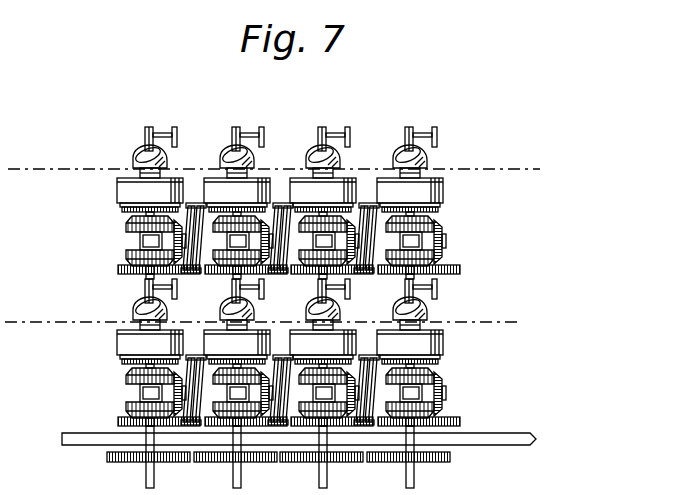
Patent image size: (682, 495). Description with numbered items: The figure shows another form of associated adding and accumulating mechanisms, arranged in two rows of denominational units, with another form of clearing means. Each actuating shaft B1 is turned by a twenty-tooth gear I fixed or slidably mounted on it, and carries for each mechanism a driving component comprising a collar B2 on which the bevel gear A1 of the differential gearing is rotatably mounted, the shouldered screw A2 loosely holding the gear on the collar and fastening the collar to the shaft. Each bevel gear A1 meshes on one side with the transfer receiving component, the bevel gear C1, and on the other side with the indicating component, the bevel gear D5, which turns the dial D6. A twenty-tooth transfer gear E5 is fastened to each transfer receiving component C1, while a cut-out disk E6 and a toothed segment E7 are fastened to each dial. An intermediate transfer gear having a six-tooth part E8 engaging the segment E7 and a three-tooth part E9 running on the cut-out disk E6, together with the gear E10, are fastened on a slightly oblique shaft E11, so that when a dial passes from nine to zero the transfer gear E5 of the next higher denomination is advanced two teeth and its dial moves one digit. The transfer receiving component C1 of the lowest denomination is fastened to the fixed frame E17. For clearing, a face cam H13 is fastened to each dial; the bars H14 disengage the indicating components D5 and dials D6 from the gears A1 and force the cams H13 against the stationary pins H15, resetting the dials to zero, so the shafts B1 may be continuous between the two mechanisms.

The bar H14 is at (40, 168).
The stationary pin H15 is at (170, 128).
The face cam H13 is at (138, 156).
The dial D6 is at (118, 190).
The cut-out disk E6 is at (120, 205).
The toothed segment E7 is at (123, 207).
The indicating component D5 is at (133, 222).
The collar B2 is at (142, 240).
The transfer receiving component C1 is at (130, 255).
The shouldered screw A2 is at (270, 242).
The bevel gear A1 is at (186, 238).
The transfer gear E5 is at (120, 270).
The six-tooth part of intermediate transfer gear E8 is at (191, 206).
The three-tooth part of intermediate transfer gear E9 is at (200, 206).
The shaft E11 is at (197, 393).
The gear E10 is at (286, 424).
The fixed frame E17 is at (536, 438).
The shaft B1 is at (146, 481).
The gear I is at (180, 462).